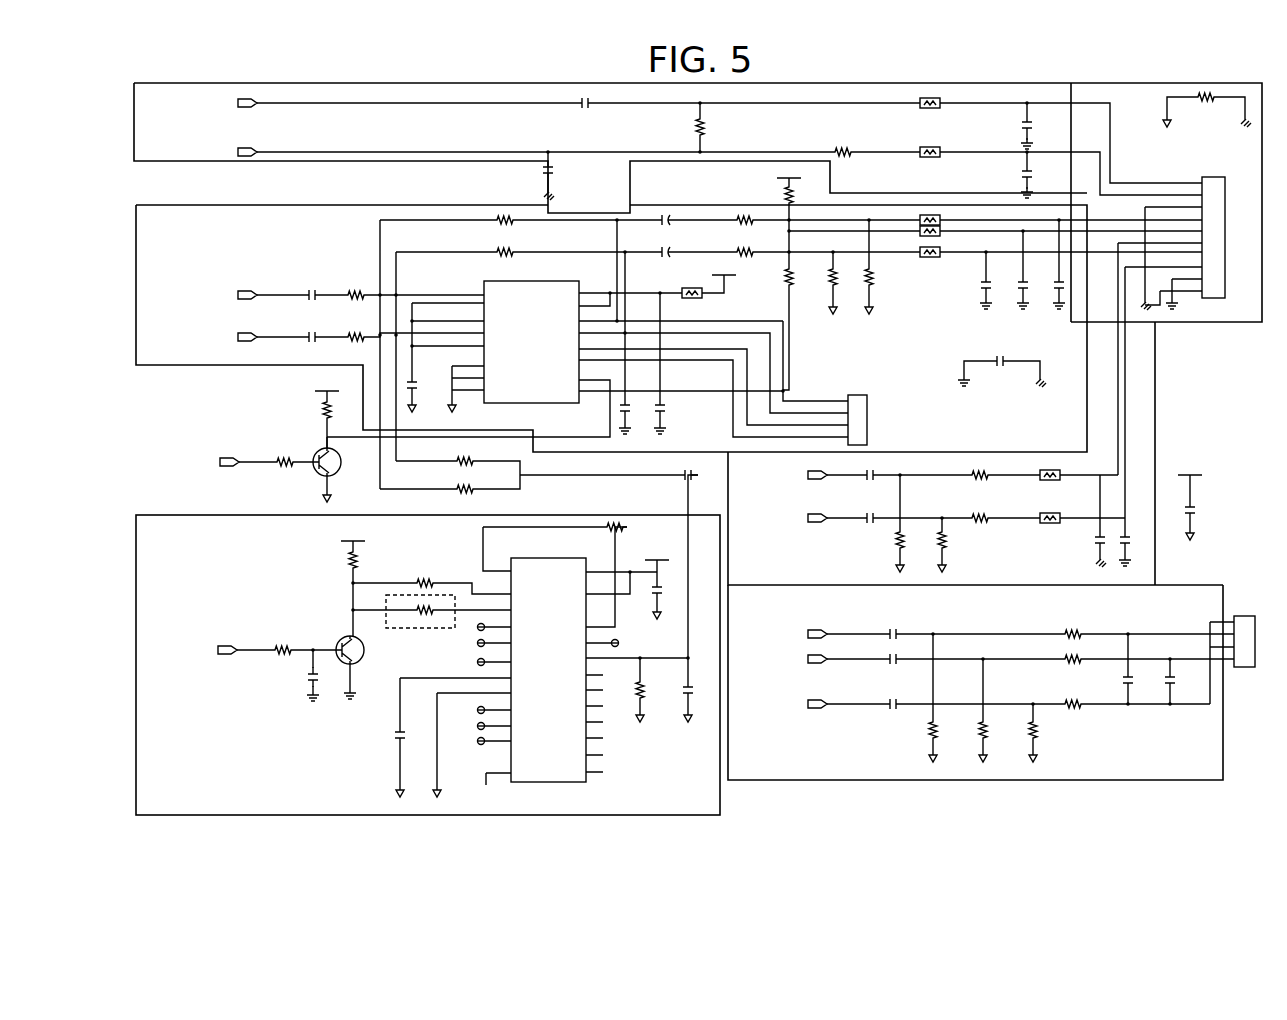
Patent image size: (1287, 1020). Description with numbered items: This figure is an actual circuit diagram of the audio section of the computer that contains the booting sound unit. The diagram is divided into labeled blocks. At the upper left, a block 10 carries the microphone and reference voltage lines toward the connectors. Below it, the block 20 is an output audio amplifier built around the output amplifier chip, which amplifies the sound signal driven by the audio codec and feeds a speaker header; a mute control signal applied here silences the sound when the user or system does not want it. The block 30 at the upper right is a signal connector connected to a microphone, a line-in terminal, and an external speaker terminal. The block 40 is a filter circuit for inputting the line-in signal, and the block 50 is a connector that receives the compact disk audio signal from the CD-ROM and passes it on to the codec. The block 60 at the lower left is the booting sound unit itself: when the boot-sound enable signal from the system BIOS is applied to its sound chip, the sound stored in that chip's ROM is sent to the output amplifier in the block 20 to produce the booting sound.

The audio input/reference block 10 is at (668, 202).
The output amplifier block 20 is at (669, 412).
The signal connector block 30 is at (1166, 300).
The filter circuit block 40 is at (976, 453).
The CD-audio connector block 50 is at (1000, 682).
The booting sound unit block 60 is at (428, 664).